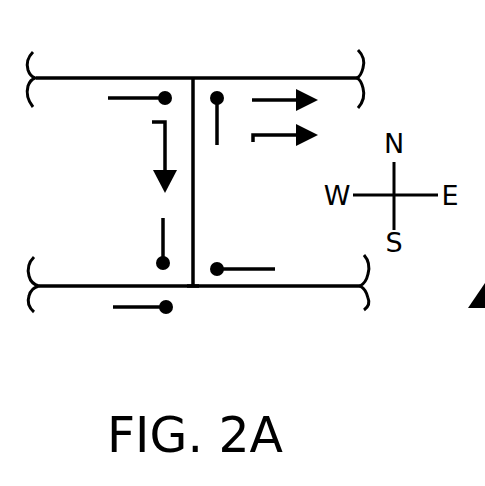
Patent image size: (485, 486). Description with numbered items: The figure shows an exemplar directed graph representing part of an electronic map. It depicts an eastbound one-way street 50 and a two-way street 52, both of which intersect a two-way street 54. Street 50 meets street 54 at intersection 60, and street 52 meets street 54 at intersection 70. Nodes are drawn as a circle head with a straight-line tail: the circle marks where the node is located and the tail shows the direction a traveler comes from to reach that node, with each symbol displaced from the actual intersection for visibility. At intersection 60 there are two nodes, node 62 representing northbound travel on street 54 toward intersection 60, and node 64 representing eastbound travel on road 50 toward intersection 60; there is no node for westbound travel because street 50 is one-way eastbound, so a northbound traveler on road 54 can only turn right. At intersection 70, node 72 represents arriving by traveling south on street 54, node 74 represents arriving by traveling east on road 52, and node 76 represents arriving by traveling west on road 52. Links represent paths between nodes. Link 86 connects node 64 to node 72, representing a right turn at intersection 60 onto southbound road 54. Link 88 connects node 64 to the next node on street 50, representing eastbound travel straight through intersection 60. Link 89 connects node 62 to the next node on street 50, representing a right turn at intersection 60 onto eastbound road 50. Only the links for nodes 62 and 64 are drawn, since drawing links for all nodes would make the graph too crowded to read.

The eastbound one-way street 50 is at (281, 77).
The two-way street 52 is at (283, 288).
The two-way street 54 is at (195, 238).
The intersection 60 is at (197, 73).
The node 62 is at (217, 145).
The node 64 is at (122, 101).
The intersection 70 is at (195, 288).
The node 72 is at (162, 240).
The node 74 is at (128, 308).
The node 76 is at (253, 266).
The link 86 is at (163, 148).
The link 88 is at (282, 103).
The link 89 is at (272, 137).